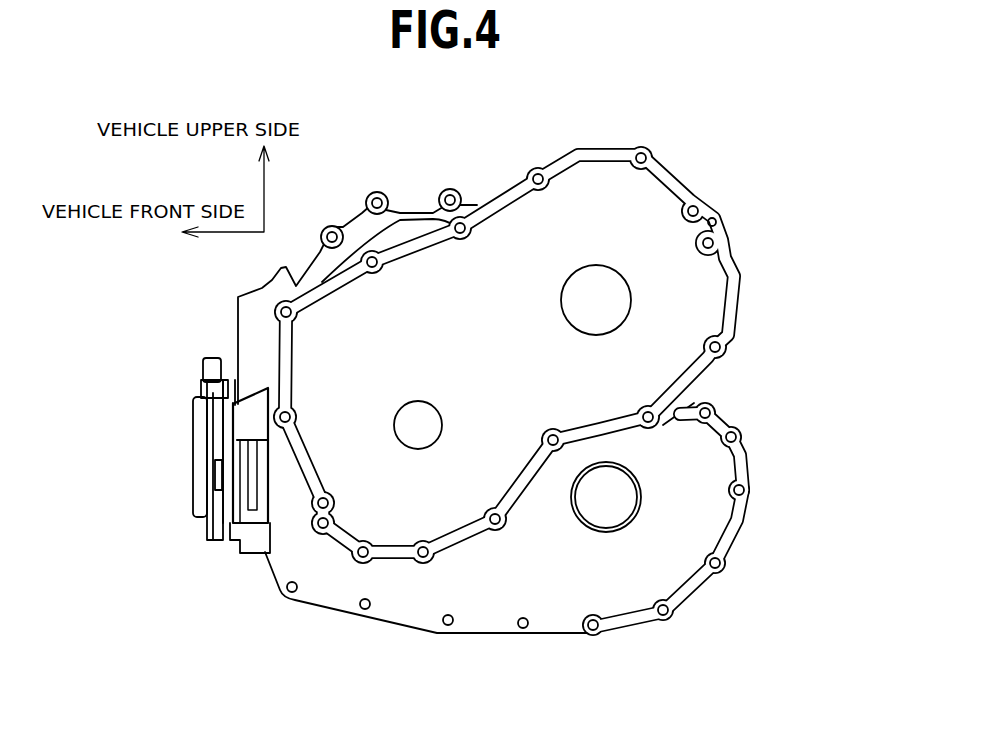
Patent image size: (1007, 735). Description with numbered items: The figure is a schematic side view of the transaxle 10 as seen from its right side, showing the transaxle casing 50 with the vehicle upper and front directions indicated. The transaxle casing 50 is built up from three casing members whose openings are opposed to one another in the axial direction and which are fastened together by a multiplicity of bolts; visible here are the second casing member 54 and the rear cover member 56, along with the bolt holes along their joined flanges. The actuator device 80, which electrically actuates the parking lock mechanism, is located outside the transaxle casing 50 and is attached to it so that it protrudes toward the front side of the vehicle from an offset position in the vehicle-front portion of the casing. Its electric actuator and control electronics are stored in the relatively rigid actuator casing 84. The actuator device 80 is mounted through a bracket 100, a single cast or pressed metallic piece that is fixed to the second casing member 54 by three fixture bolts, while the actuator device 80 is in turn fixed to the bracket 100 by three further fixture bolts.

The transaxle 10 is at (712, 173).
The transaxle casing 50 is at (428, 182).
The second casing member 54 is at (677, 525).
The rear cover member 56 is at (682, 293).
The actuator device 80 is at (188, 412).
The actuator casing 84 is at (193, 493).
The bracket 100 is at (259, 531).